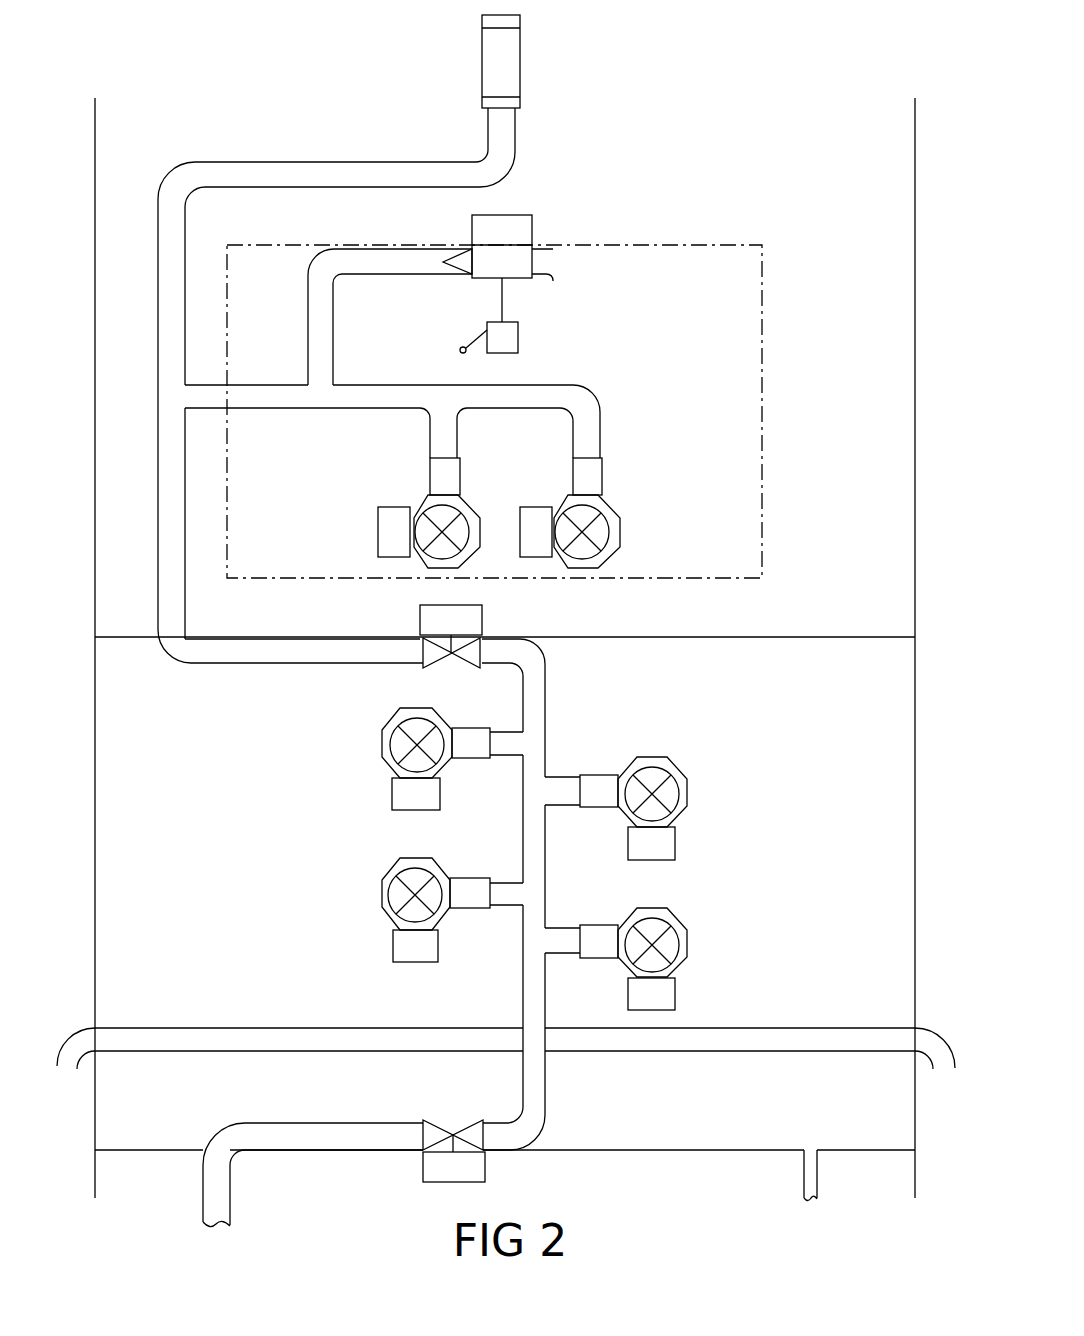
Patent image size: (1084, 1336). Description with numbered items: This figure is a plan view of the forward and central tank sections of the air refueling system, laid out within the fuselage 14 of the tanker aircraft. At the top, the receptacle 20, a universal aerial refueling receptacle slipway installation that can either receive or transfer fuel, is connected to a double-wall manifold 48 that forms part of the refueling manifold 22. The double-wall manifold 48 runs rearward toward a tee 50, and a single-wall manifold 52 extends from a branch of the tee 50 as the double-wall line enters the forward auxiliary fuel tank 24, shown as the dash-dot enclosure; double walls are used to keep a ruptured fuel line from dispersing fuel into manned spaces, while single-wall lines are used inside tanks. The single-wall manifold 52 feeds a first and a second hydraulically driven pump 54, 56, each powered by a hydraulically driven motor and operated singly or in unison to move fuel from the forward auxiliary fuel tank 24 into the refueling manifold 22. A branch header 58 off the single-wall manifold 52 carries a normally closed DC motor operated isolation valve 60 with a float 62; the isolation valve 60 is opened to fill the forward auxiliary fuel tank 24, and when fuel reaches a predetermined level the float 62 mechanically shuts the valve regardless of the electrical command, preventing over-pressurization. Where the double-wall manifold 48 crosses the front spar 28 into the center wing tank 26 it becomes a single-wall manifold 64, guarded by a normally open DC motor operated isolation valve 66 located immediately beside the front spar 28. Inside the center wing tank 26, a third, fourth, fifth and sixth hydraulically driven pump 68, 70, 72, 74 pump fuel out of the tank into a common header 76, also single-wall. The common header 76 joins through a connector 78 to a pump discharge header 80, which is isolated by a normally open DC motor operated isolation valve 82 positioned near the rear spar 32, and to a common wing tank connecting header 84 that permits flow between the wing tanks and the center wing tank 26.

The fuselage 14 is at (913, 210).
The receptacle 20 is at (513, 78).
The refueling manifold 22 is at (148, 302).
The forward auxiliary fuel tank 24 is at (770, 407).
The center wing tank 26 is at (830, 722).
The front spar 28 is at (837, 630).
The rear spar 32 is at (760, 1144).
The double-wall manifold 48 is at (502, 127).
The tee 50 is at (180, 398).
The single-wall manifold 52 is at (512, 395).
The first hydraulically driven pump 54 is at (422, 512).
The second hydraulically driven pump 56 is at (612, 503).
The branch header 58 is at (352, 263).
The isolation valve 60 is at (515, 265).
The float 62 is at (508, 340).
The single-wall manifold 64 is at (228, 655).
The isolation valve 66 is at (438, 670).
The third hydraulically driven pump 68 is at (392, 768).
The fourth hydraulically driven pump 70 is at (677, 762).
The fifth hydraulically driven pump 72 is at (393, 867).
The sixth hydraulically driven pump 74 is at (677, 918).
The common header 76 is at (545, 868).
The connector 78 is at (533, 1040).
The pump discharge header 80 is at (322, 1133).
The isolation valve 82 is at (443, 1123).
The common wing tank connecting header 84 is at (762, 1035).